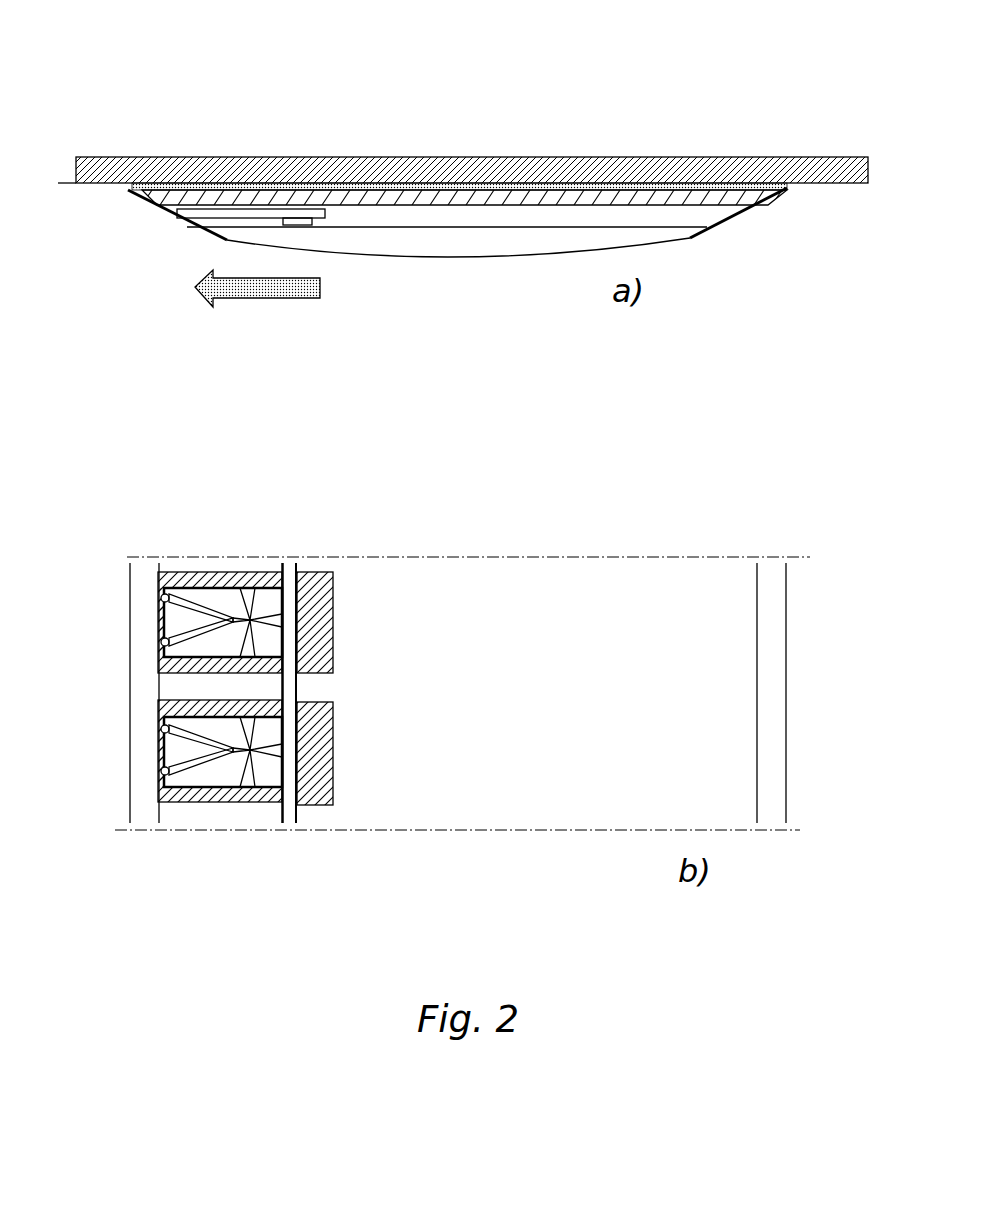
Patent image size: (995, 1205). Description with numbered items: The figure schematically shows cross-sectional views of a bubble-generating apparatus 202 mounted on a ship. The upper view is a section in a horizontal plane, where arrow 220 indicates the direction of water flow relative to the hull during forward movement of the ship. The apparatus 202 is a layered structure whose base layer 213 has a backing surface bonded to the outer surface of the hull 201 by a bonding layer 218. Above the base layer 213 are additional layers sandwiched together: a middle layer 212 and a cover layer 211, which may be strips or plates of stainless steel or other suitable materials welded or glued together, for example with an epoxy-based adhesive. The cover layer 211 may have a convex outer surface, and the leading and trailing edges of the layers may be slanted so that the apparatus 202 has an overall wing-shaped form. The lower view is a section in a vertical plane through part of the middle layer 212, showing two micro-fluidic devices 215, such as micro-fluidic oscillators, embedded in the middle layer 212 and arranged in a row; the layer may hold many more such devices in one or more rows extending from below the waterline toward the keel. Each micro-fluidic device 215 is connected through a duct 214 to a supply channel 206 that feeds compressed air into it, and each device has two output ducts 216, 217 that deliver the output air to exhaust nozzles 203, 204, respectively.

The hull 201 is at (470, 157).
The apparatus 202 is at (720, 242).
The exhaust nozzle 203 is at (157, 590).
The exhaust nozzle 204 is at (162, 637).
The supply channel 206 is at (293, 222).
The cover layer 211 is at (353, 247).
The middle layer 212 is at (405, 217).
The base layer 213 is at (712, 187).
The duct 214 is at (282, 622).
The micro-fluidic device 215 is at (250, 213).
The output duct 216 is at (200, 605).
The output duct 217 is at (180, 640).
The bonding layer 218 is at (172, 184).
The arrow 220 is at (255, 285).